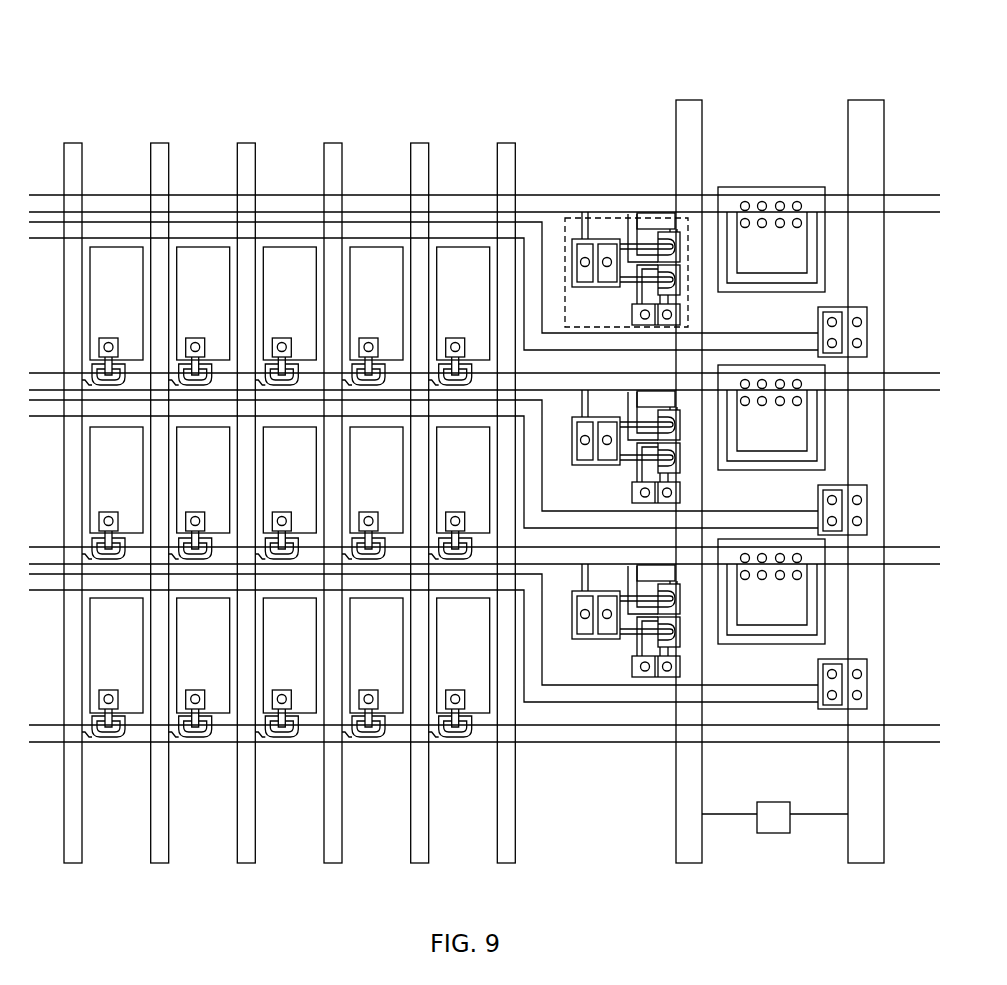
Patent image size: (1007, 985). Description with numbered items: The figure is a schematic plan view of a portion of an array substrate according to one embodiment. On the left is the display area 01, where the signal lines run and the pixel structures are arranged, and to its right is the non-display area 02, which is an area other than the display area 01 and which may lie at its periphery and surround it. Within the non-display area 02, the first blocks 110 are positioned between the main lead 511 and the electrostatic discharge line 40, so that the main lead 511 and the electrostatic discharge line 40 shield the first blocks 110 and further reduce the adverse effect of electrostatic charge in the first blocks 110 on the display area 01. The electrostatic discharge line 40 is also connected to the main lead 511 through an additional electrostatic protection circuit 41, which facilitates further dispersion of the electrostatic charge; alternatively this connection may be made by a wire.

The display area 01 is at (517, 128).
The non-display area 02 is at (925, 128).
The electrostatic discharge line 40 is at (683, 127).
The electrostatic protection circuit 41 is at (636, 218).
The main lead 511 is at (862, 130).
The first block 110 is at (766, 232).